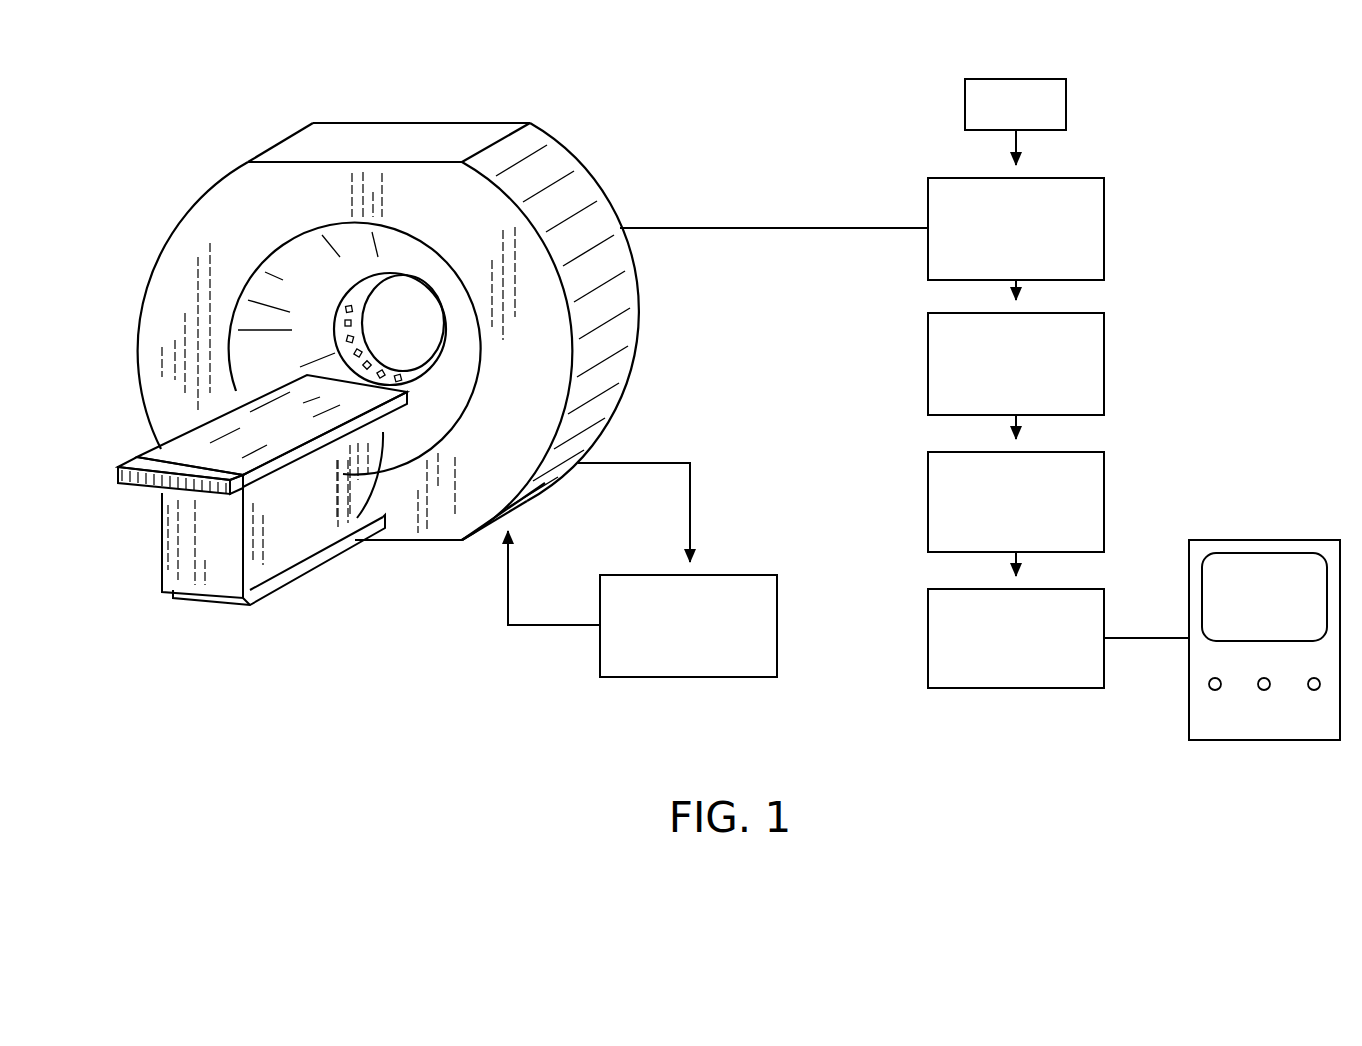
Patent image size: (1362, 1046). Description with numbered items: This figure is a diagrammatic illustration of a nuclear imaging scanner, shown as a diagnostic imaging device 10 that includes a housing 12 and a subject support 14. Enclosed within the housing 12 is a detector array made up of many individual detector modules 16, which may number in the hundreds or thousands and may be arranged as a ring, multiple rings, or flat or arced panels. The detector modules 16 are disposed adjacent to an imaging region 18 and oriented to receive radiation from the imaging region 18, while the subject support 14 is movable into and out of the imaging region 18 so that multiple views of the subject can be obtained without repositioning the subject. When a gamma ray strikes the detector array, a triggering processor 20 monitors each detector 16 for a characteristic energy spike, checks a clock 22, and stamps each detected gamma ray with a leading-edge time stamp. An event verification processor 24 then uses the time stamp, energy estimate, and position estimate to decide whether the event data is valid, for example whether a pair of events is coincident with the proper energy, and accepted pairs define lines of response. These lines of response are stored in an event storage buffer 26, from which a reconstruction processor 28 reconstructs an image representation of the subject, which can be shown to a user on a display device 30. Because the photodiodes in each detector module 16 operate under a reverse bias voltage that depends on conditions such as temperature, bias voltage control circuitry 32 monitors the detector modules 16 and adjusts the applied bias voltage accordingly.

The diagnostic imaging device 10 is at (636, 176).
The housing 12 is at (460, 550).
The subject support 14 is at (188, 598).
The detector modules 16 is at (330, 325).
The imaging region 18 is at (378, 299).
The triggering processor 20 is at (928, 255).
The clock 22 is at (965, 92).
The event verification processor 24 is at (928, 388).
The event storage buffer 26 is at (928, 520).
The reconstruction processor 28 is at (928, 668).
The display device 30 is at (1189, 690).
The bias voltage control circuitry 32 is at (670, 575).